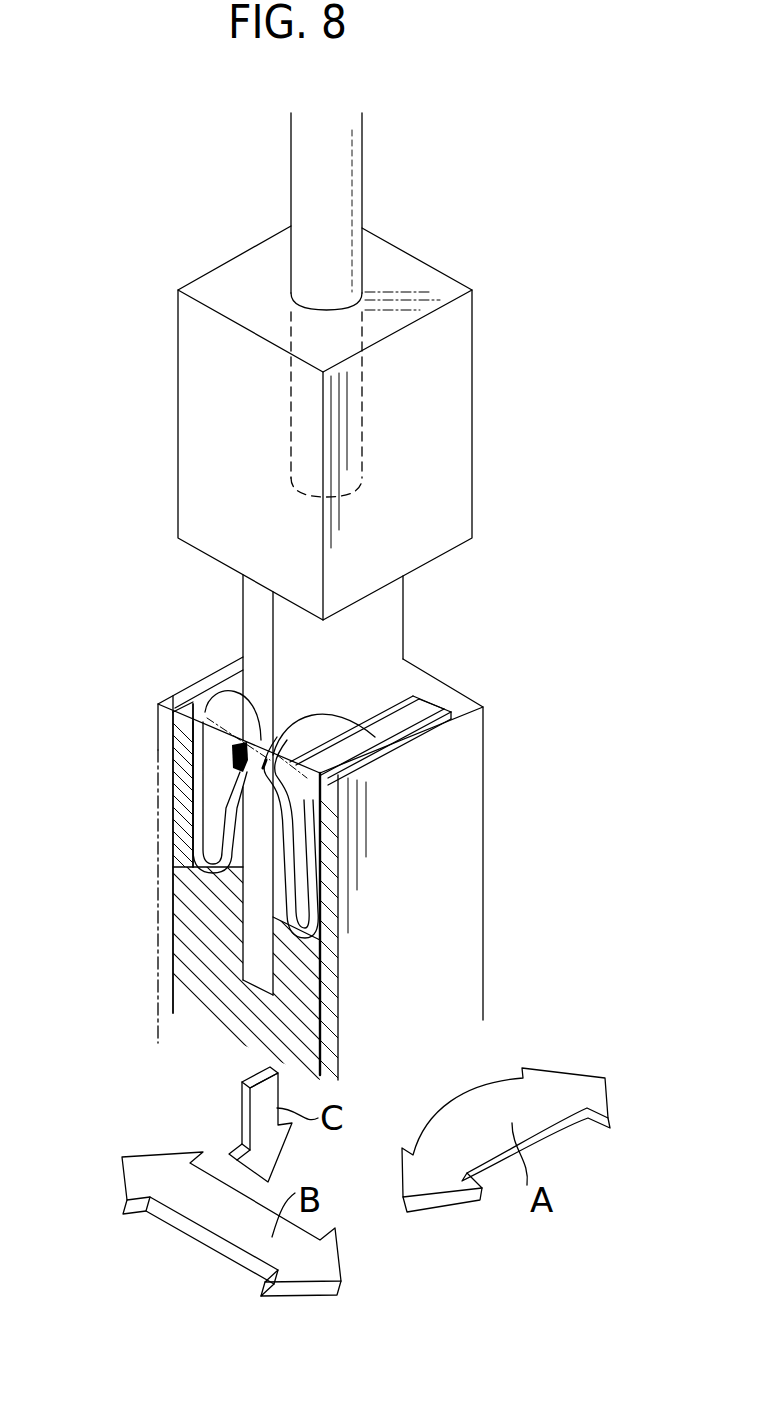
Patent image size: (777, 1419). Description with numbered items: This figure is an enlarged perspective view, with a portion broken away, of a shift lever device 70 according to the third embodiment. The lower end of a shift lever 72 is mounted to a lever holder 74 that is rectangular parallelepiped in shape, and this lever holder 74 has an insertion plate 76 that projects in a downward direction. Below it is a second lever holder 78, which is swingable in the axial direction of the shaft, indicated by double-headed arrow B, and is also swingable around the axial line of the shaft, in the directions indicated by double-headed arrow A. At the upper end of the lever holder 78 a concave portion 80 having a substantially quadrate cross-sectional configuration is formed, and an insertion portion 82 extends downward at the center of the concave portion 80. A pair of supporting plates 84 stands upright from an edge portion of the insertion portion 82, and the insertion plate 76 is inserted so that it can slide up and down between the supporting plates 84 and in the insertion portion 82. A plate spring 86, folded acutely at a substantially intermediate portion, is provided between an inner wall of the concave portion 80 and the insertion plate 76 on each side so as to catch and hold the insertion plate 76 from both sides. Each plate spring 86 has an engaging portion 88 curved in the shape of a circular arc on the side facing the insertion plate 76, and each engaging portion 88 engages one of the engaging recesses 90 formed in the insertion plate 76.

The shift lever device 70 is at (566, 415).
The shift lever 72 is at (305, 188).
The lever holder 74 is at (192, 396).
The insertion plate 76 is at (253, 623).
The lever holder 78 is at (465, 771).
The concave portion 80 is at (415, 693).
The insertion portion 82 is at (258, 940).
The supporting plates 84 is at (318, 790).
The plate spring 86 is at (180, 756).
The engaging portion 88 is at (238, 692).
The engaging recesses 90 is at (232, 768).